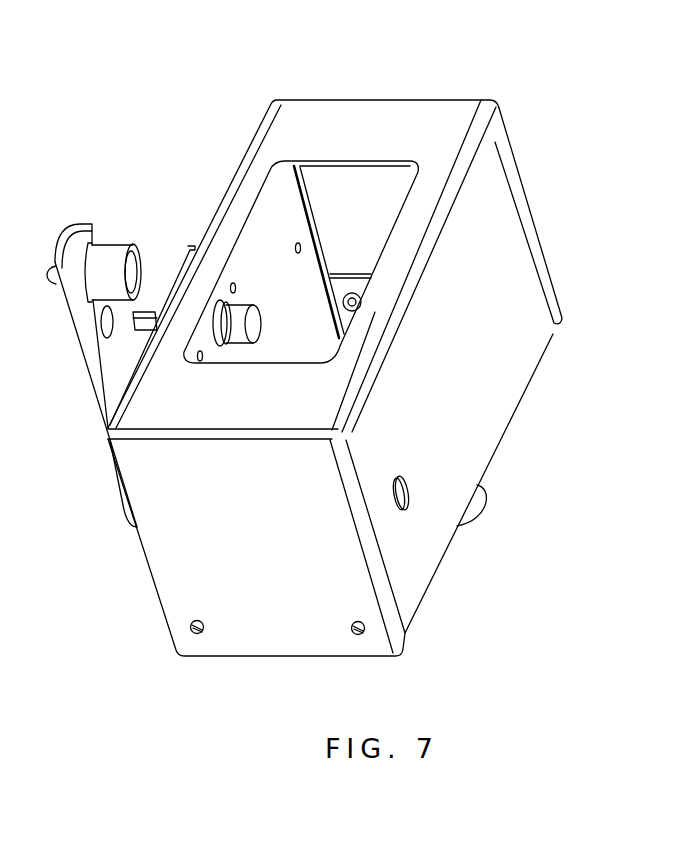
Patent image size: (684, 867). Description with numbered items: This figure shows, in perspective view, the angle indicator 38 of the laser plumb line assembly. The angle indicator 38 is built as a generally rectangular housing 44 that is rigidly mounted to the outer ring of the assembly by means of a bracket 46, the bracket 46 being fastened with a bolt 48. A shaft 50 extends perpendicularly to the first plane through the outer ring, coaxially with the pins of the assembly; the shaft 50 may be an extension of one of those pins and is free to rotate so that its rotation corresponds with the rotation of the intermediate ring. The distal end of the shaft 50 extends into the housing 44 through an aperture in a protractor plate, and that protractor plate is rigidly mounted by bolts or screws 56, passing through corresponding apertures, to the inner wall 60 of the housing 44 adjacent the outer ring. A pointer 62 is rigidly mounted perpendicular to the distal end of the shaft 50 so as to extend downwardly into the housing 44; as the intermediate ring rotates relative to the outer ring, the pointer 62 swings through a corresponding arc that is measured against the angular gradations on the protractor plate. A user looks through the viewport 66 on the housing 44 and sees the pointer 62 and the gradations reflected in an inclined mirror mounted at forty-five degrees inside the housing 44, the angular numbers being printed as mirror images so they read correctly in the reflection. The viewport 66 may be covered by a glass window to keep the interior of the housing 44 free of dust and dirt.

The angle indicator 38 is at (548, 103).
The housing 44 is at (532, 197).
The bracket 46 is at (92, 400).
The bolt 48 is at (112, 262).
The shaft 50 is at (150, 312).
The screws 56 is at (298, 243).
The inner wall 60 is at (282, 292).
The pointer 62 is at (238, 343).
The viewport 66 is at (357, 228).